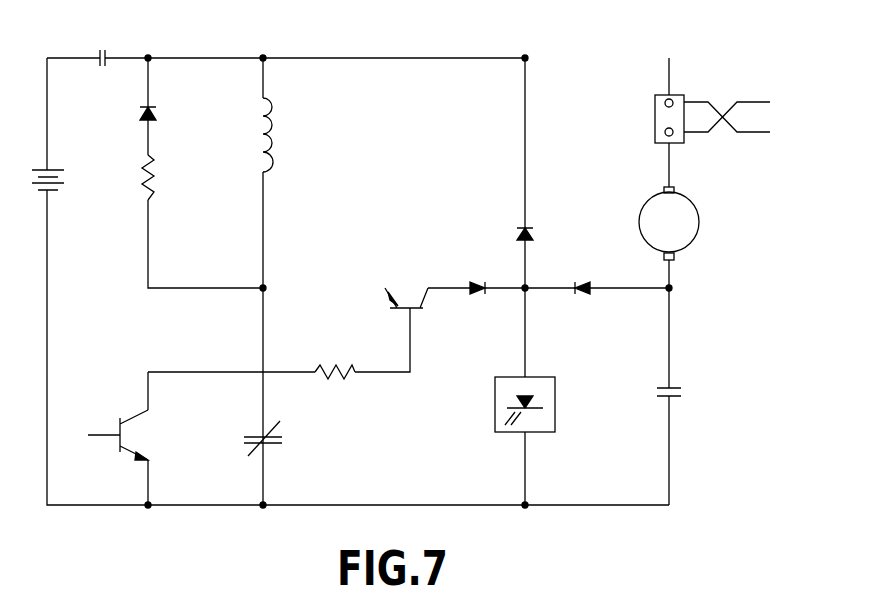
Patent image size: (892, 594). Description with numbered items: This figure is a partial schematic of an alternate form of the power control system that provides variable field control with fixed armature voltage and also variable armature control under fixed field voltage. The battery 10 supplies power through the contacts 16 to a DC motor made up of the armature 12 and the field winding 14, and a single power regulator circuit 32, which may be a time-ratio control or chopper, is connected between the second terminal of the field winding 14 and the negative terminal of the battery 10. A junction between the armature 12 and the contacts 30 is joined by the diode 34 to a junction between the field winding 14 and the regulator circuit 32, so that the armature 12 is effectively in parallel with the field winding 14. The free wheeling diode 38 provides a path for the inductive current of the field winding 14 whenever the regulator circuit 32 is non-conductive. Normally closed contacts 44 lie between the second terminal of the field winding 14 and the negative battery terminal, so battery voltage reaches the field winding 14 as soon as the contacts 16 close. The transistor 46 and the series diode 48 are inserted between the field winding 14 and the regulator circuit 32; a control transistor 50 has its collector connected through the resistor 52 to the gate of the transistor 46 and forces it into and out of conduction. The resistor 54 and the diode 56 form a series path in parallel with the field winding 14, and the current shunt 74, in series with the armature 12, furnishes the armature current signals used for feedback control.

The battery 10 is at (66, 178).
The armature 12 is at (700, 210).
The field winding 14 is at (275, 152).
The contacts 16 is at (103, 47).
The contacts 30 is at (686, 394).
The power regulator circuit 32 is at (558, 412).
The diode 34 is at (593, 282).
The free wheeling diode 38 is at (538, 234).
The contacts 44 is at (290, 442).
The transistor 46 is at (409, 292).
The diode 48 is at (480, 284).
The control transistor 50 is at (130, 414).
The resistor 52 is at (337, 384).
The resistor 54 is at (160, 173).
The diode 56 is at (160, 108).
The current shunt 74 is at (652, 120).